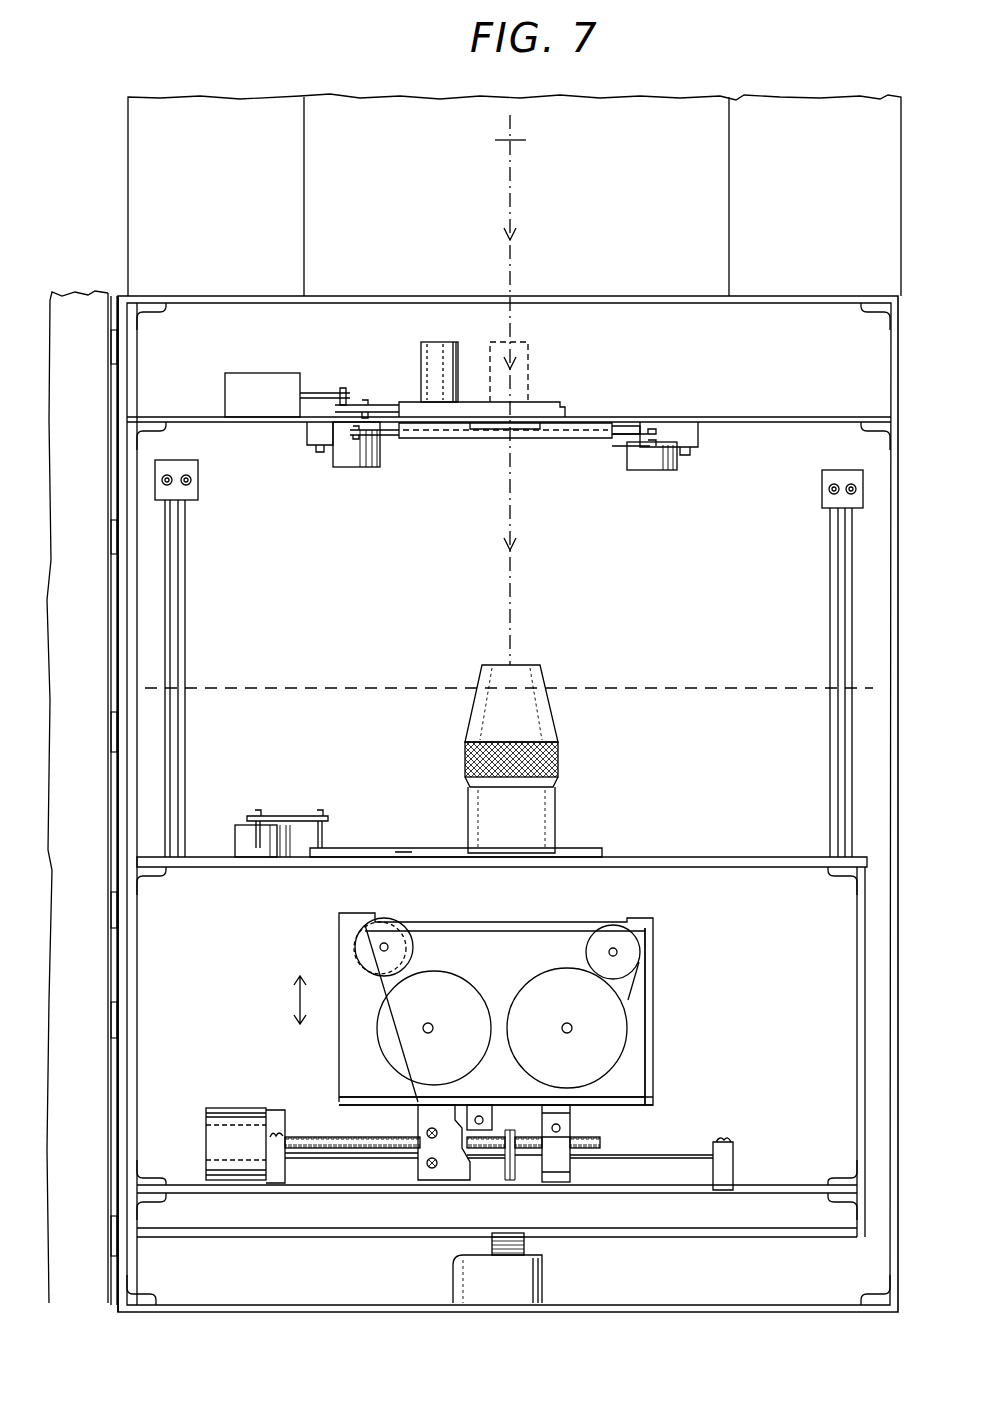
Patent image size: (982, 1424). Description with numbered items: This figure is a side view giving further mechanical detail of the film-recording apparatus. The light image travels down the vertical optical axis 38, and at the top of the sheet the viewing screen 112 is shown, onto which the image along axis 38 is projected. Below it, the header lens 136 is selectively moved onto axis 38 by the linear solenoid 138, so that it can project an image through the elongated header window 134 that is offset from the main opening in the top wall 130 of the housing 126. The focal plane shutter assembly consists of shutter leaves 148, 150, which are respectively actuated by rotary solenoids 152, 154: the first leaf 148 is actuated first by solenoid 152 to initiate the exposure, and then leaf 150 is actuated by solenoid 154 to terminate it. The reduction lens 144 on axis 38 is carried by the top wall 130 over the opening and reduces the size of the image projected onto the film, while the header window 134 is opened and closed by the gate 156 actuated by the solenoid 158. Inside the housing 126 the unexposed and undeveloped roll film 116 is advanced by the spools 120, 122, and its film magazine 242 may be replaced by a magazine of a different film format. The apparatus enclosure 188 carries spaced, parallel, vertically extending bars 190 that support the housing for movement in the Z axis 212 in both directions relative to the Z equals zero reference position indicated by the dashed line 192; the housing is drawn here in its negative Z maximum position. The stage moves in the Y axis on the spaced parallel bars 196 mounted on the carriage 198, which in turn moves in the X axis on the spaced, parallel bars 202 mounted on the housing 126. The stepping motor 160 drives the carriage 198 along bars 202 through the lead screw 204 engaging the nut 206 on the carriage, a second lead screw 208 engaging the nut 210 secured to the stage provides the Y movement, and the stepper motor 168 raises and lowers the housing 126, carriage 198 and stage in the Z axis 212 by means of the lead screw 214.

The viewing screen 112 is at (718, 215).
The axis 38 is at (514, 500).
The enclosure 188 is at (898, 608).
The linear solenoid 138 is at (260, 375).
The header lens 136 is at (420, 358).
The shutter leaf 148 is at (494, 438).
The shutter leaf 150 is at (450, 438).
The rotary solenoid 154 is at (356, 467).
The rotary solenoid 152 is at (658, 470).
The vertically extending bars 190 is at (182, 626).
The dashed line 192 is at (678, 688).
The reduction lens 144 is at (545, 714).
The solenoid 158 is at (237, 840).
The gate 156 is at (435, 855).
The top wall 130 is at (762, 870).
The housing 126 is at (857, 1010).
The roll film 116 is at (578, 928).
The spool 120 is at (434, 1028).
The spool 122 is at (567, 1028).
The film magazine 242 is at (654, 1010).
The elongated window 134 is at (655, 1104).
The Z axis 212 is at (298, 995).
The stepper motor 160 is at (232, 1125).
The lead screw 204 is at (317, 1137).
The nut 210 is at (480, 1105).
The lead screw 208 is at (483, 1120).
The nut 206 is at (511, 1178).
The carriage 198 is at (572, 1122).
The bars 196 is at (561, 1129).
The bars 202 is at (684, 1155).
The lead screw 214 is at (524, 1243).
The stepper motor 168 is at (535, 1282).